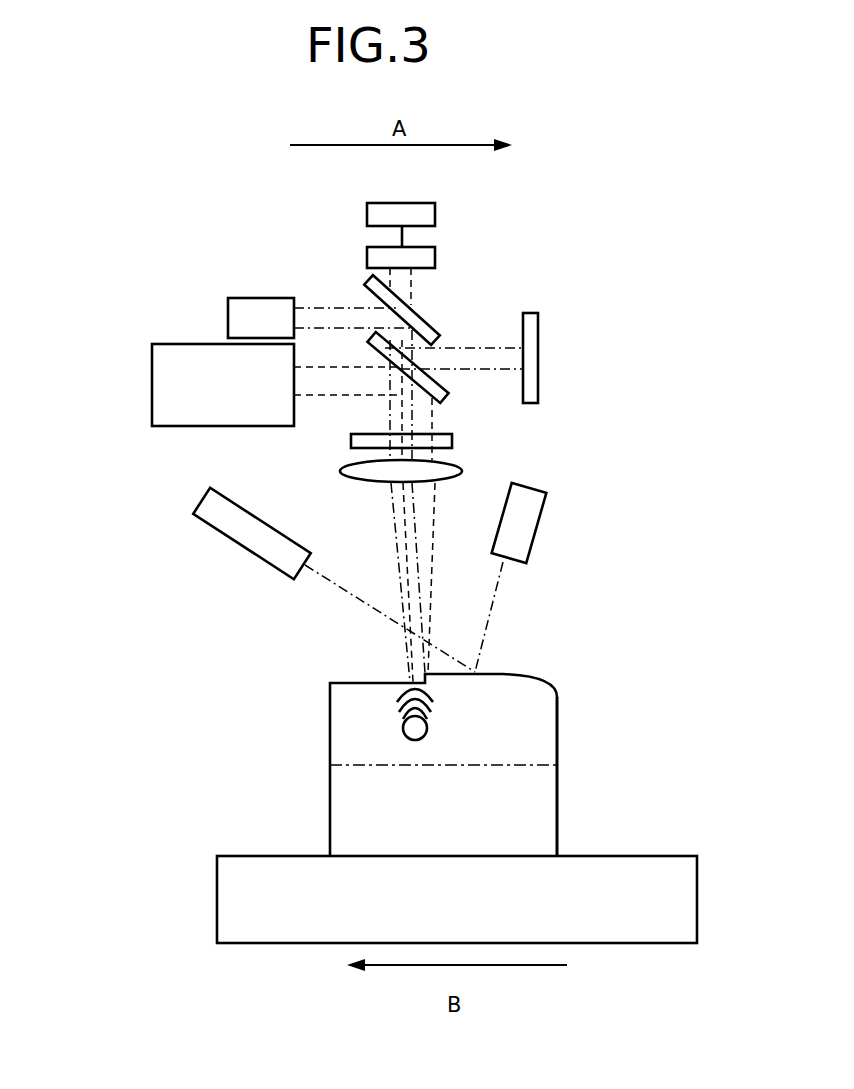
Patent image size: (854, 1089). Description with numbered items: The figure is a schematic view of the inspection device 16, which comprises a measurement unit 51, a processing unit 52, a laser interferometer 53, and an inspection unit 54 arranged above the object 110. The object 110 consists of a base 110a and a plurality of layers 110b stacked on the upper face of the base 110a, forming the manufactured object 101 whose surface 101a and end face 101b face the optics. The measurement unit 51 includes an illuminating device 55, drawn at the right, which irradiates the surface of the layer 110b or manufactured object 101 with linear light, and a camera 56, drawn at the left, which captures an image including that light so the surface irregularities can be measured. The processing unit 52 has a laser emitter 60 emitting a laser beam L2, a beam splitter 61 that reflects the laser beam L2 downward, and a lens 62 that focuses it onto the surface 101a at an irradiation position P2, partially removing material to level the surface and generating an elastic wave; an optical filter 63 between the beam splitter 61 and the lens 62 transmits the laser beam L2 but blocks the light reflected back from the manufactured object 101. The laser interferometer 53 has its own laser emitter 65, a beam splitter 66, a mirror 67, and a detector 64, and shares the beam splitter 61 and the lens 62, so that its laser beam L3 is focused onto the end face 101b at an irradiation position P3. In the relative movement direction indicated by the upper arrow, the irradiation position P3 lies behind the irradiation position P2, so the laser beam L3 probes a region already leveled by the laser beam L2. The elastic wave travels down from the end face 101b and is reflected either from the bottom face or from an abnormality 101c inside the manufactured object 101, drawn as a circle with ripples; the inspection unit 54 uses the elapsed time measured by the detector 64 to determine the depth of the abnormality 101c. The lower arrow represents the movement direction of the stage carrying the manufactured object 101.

The inspection device 16 is at (576, 222).
The measurement unit 51 is at (571, 488).
The processing unit 52 is at (121, 338).
The laser interferometer 53 is at (342, 219).
The inspection unit 54 is at (410, 203).
The illuminating device 55 is at (547, 526).
The camera 56 is at (241, 547).
The laser emitter 60 is at (151, 388).
The beam splitter 61 is at (449, 392).
The lens 62 is at (463, 470).
The optical filter 63 is at (453, 441).
The detector 64 is at (437, 258).
The laser emitter 65 is at (243, 298).
The beam splitter 66 is at (438, 318).
The mirror 67 is at (540, 338).
The manufactured object 101 is at (491, 724).
The surface 101a is at (491, 724).
The end face 101b is at (491, 724).
The abnormality 101c is at (412, 738).
The object 110 is at (406, 820).
The base 110a is at (262, 855).
The layer 110b is at (557, 735).
The laser beam L2 is at (337, 397).
The laser beam L3 is at (330, 306).
The irradiation position P2 is at (427, 673).
The irradiation position P3 is at (410, 682).